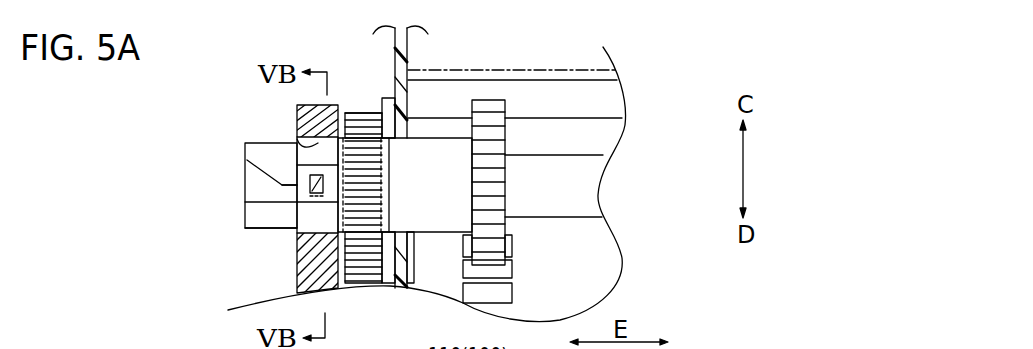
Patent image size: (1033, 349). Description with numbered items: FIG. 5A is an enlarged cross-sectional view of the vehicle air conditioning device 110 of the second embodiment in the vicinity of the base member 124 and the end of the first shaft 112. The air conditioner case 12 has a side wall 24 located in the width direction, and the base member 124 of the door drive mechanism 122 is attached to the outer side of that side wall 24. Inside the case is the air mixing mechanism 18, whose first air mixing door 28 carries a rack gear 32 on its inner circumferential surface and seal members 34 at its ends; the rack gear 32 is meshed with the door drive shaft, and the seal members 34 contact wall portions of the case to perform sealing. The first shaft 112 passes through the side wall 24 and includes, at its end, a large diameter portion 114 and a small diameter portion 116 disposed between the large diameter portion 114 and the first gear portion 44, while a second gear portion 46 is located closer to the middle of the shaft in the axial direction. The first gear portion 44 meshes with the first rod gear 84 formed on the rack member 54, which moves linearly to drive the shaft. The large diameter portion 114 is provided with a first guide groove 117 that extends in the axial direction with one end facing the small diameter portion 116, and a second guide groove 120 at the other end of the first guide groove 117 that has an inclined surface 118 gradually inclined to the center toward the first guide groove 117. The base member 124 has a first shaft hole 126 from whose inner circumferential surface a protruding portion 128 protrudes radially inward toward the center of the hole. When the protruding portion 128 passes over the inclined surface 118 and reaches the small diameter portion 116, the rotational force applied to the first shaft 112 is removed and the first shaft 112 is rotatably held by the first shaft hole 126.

The air conditioner case 12 is at (417, 49).
The air mixing mechanism 18 is at (636, 127).
The side wall 24 is at (393, 53).
The first air mixing door 28 is at (608, 253).
The rack gear 32 is at (498, 293).
The seal member 34 is at (568, 98).
The first gear portion 44 is at (368, 198).
The second gear portion 46 is at (487, 117).
The rack member 54 is at (359, 102).
The first rod gear 84 is at (367, 273).
The vehicle air conditioning device 110 is at (122, 124).
The first shaft 112 is at (580, 181).
The large diameter portion 114 is at (262, 215).
The small diameter portion 116 is at (318, 203).
The first guide groove 117 is at (287, 194).
The inclined surface 118 is at (255, 172).
The second guide groove 120 is at (260, 192).
The door drive mechanism 122 is at (215, 121).
The base member 124 is at (284, 277).
The first shaft hole 126 is at (298, 142).
The protruding portion 128 is at (328, 171).